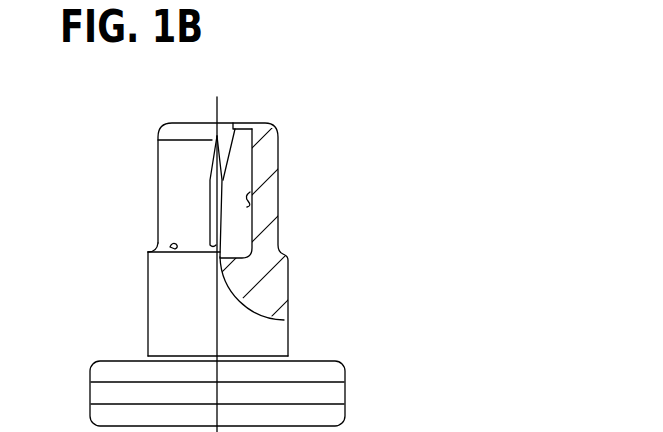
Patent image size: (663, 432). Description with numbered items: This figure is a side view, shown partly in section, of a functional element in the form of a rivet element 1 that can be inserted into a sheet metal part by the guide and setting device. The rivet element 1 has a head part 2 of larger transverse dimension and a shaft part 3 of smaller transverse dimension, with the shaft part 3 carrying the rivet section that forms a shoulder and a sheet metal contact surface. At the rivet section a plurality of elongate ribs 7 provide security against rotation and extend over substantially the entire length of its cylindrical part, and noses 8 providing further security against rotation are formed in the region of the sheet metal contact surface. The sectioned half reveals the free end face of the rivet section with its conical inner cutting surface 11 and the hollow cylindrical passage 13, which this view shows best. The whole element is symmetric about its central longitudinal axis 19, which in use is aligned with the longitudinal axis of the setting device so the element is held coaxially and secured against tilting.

The rivet element 1 is at (326, 216).
The head part 2 is at (333, 390).
The shaft part 3 is at (163, 308).
The elongate ribs 7 is at (279, 157).
The noses 8 is at (170, 247).
The conical inner cutting surface 11 is at (253, 123).
The hollow cylindrical passage 13 is at (252, 205).
The central longitudinal axis 19 is at (216, 107).